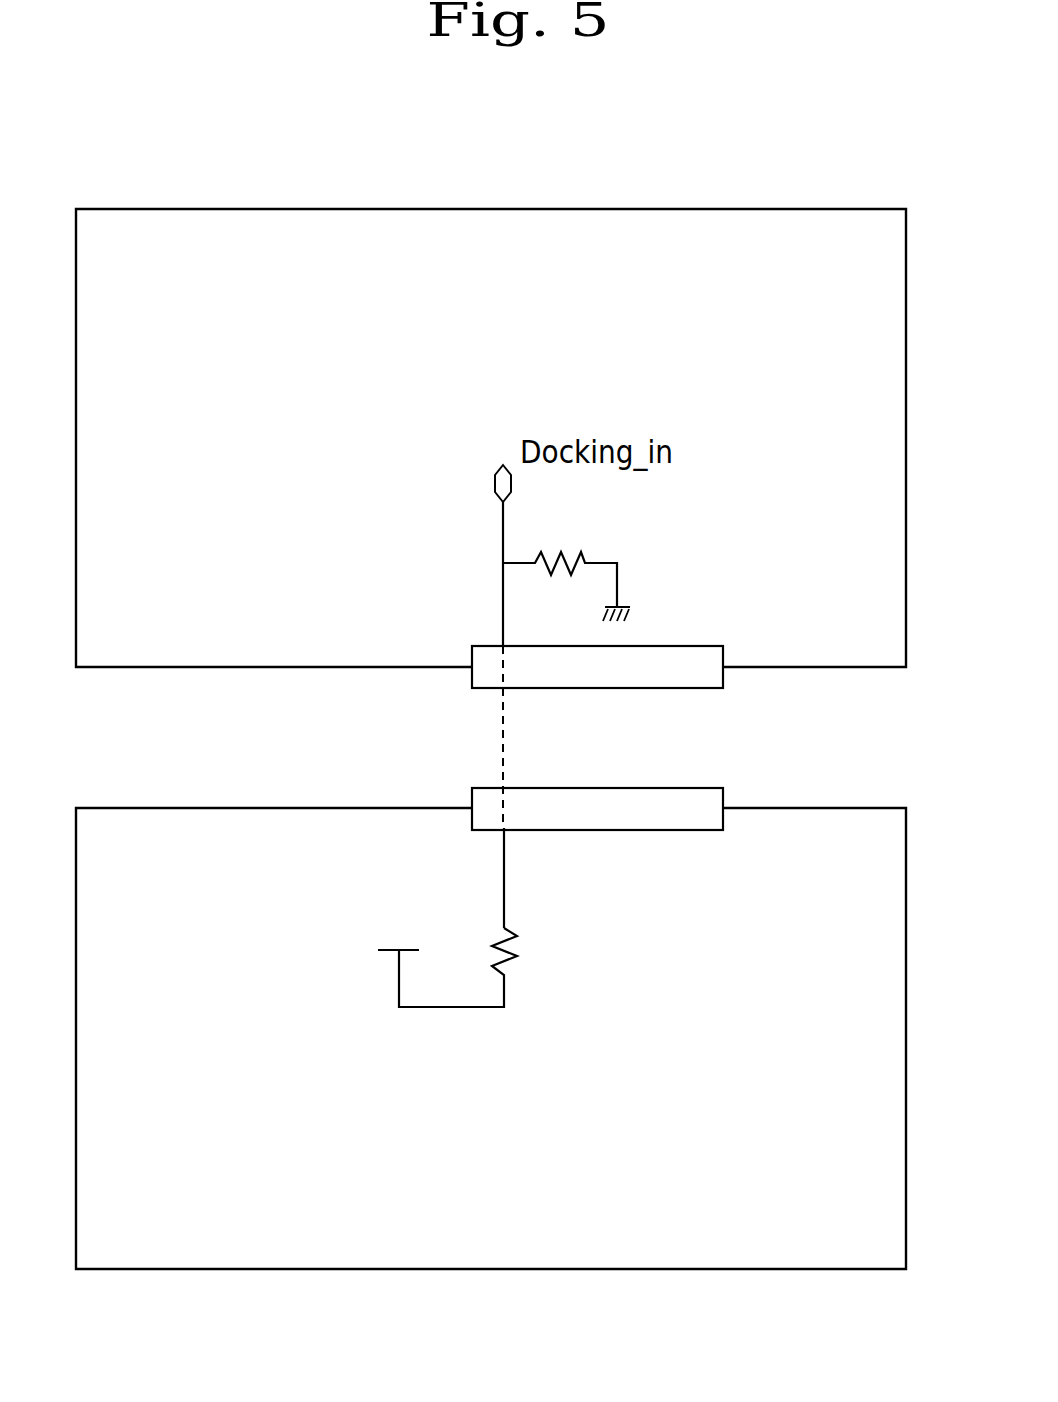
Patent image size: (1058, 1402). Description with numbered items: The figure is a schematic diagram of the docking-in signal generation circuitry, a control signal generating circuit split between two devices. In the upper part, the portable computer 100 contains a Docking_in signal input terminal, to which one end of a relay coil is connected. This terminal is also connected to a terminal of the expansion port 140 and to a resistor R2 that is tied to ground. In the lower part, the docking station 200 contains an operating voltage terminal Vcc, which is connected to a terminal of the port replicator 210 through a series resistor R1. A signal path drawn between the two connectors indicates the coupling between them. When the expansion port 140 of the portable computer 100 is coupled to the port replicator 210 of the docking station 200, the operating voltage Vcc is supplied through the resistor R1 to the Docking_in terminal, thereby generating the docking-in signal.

The portable computer 100 is at (750, 209).
The docking station 200 is at (752, 1270).
The expansion port 140 is at (723, 683).
The port replicator 210 is at (723, 797).
The series resistor R1 is at (464, 960).
The resistor R2 is at (566, 567).